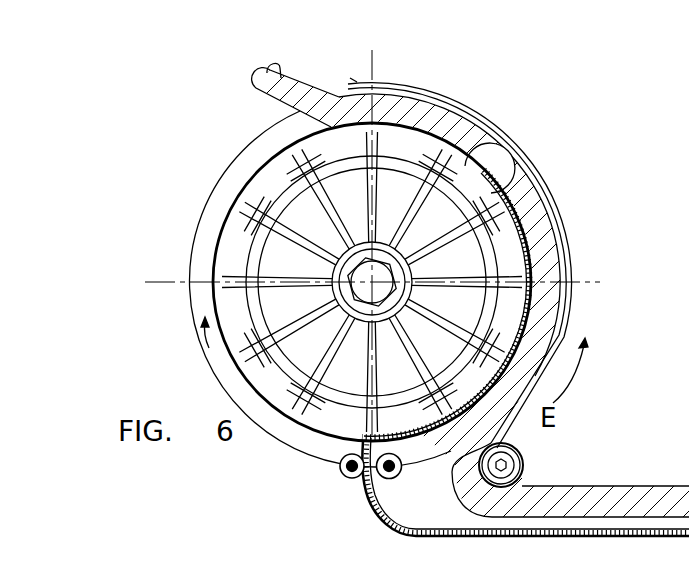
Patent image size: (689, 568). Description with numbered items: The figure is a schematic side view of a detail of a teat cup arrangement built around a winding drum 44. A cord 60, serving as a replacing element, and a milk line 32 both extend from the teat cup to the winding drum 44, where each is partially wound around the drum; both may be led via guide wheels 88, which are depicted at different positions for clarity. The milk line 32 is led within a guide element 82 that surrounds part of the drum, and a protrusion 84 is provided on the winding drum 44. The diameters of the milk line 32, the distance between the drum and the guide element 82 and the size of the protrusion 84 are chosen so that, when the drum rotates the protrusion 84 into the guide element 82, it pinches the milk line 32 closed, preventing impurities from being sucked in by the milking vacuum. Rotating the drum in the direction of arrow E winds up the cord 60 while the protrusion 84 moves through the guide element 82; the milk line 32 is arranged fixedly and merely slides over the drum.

The milk line 32 is at (535, 215).
The winding drum 44 is at (222, 228).
The cord 60 is at (570, 409).
The guide element 82 is at (572, 302).
The protrusion 84 is at (495, 160).
The guide wheels 88 is at (386, 478).